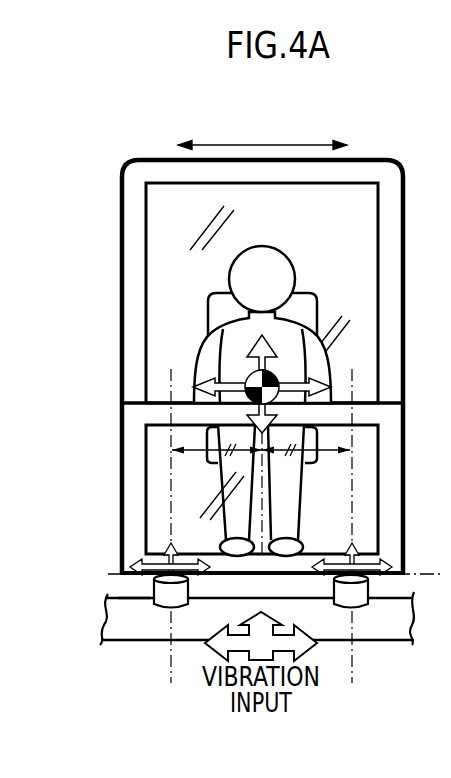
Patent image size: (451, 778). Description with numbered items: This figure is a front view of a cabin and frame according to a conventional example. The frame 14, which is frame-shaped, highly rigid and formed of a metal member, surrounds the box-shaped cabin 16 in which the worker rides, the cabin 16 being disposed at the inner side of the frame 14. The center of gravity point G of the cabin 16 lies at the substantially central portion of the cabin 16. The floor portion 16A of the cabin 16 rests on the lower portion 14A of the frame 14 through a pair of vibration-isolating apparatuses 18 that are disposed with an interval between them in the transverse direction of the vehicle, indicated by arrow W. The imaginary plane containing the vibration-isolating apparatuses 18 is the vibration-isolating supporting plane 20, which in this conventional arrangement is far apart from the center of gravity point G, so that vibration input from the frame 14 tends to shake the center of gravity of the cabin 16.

The frame 14 is at (104, 618).
The lower portion of the frame 14A is at (118, 598).
The cabin 16 is at (121, 292).
The floor portion of the cabin 16A is at (293, 576).
The vibration-isolating apparatus 18 is at (157, 606).
The vibration-isolating supporting plane 20 is at (430, 574).
The center of gravity point G is at (277, 377).
The transverse direction of the vehicle W is at (302, 145).